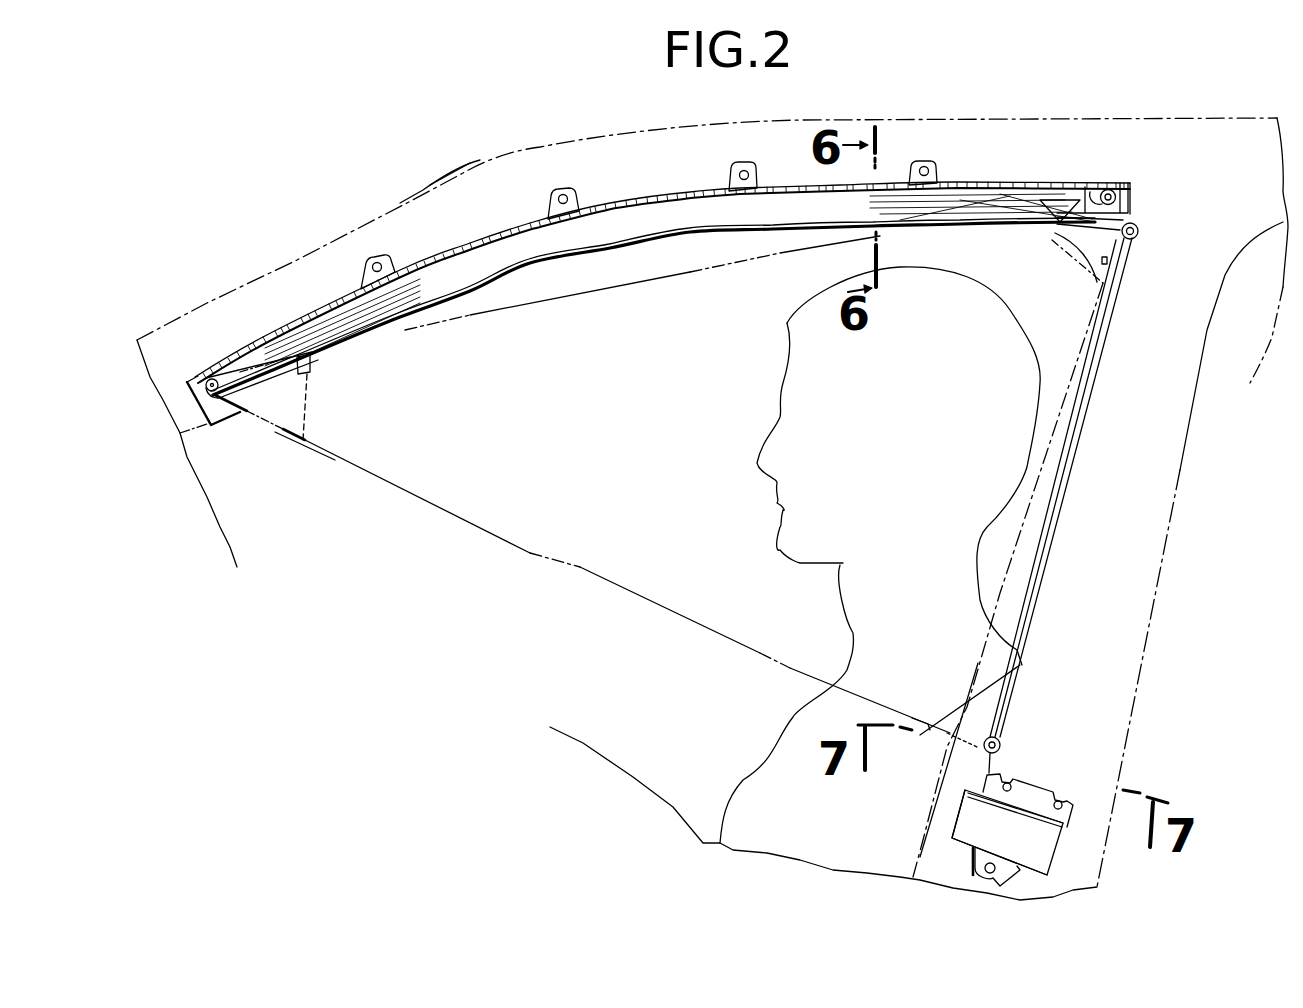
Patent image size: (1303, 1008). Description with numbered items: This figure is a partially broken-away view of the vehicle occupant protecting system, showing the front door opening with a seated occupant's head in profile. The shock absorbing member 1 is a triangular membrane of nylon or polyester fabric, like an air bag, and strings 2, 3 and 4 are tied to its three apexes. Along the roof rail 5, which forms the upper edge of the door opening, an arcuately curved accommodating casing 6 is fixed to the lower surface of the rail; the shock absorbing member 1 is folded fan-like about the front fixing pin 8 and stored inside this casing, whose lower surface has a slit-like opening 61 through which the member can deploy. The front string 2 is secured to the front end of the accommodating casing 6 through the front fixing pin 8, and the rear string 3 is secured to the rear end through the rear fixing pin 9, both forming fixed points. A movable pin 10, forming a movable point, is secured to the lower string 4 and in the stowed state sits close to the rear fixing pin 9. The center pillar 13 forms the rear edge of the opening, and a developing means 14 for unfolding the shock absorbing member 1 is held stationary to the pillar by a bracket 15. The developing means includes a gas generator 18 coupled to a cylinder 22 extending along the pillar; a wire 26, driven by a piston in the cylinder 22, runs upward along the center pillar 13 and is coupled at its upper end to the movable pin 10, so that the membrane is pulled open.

The shock absorbing member 1 is at (327, 330).
The front string 2 is at (303, 380).
The rear string 3 is at (1075, 190).
The lower string 4 is at (1135, 222).
The roof rail 5 is at (470, 160).
The accommodating casing 6 is at (466, 240).
The slit-like opening 61 is at (656, 255).
The front fixing pin 8 is at (213, 377).
The rear fixing pin 9 is at (1113, 195).
The movable pin 10 is at (1138, 230).
The center pillar 13 is at (1165, 525).
The developing means 14 is at (1078, 786).
The bracket 15 is at (1033, 800).
The gas generator 18 is at (972, 810).
The cylinder 22 is at (955, 856).
The wire 26 is at (1072, 466).